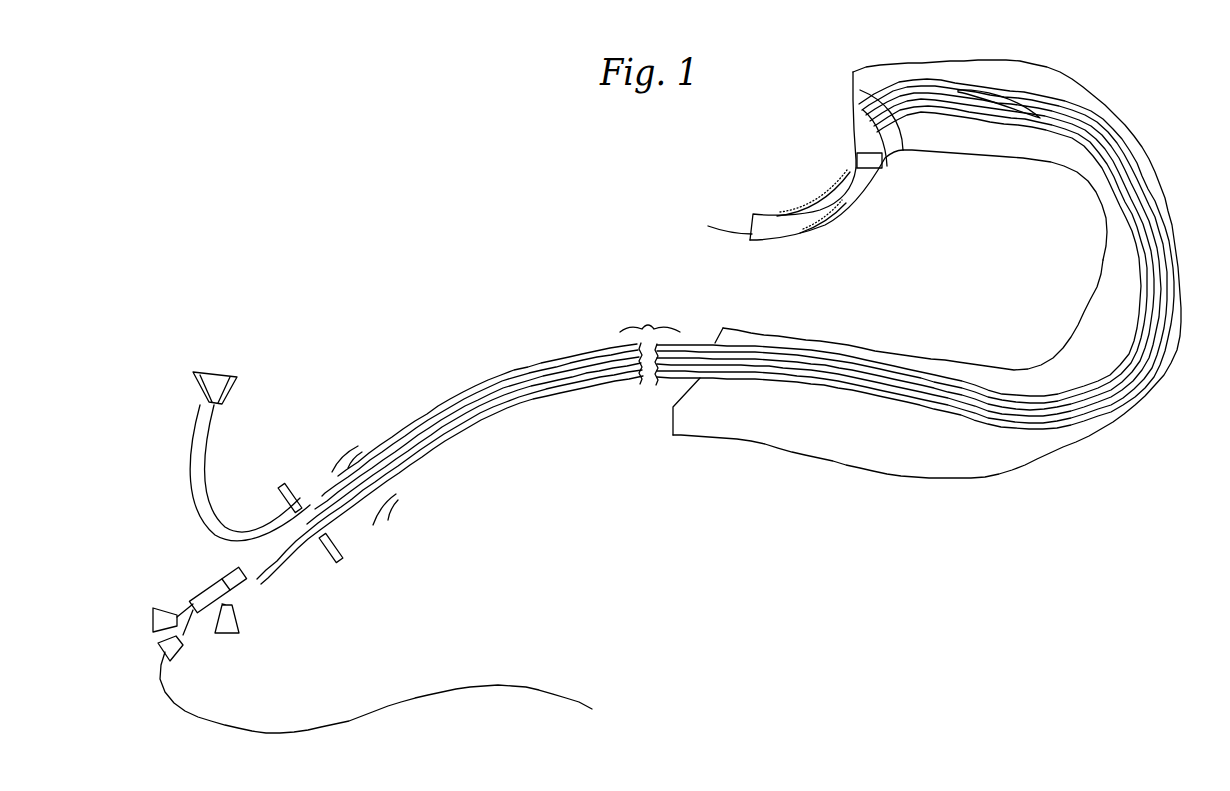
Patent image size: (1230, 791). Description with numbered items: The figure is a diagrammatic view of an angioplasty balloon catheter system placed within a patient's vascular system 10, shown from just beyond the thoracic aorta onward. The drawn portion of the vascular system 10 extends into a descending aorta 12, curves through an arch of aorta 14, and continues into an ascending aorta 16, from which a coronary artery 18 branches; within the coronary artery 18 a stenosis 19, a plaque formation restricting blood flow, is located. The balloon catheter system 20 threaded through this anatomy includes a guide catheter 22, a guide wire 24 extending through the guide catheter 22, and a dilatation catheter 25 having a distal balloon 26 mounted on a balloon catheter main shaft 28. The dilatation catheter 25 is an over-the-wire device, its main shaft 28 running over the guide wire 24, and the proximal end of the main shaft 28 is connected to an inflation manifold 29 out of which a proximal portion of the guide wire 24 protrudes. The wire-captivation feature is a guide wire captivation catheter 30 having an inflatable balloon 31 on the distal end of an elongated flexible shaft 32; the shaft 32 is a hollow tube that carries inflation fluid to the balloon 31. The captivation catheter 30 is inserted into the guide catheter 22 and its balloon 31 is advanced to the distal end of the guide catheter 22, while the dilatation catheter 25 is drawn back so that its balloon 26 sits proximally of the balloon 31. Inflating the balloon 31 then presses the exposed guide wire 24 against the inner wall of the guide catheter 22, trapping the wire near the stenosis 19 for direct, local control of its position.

The vascular system 10 is at (772, 324).
The descending aorta 12 is at (823, 340).
The arch of aorta 14 is at (1077, 322).
The ascending aorta 16 is at (1022, 161).
The coronary artery 18 is at (873, 195).
The stenosis 19 is at (823, 225).
The balloon catheter system 20 is at (458, 384).
The guide catheter 22 is at (860, 90).
The guide wire 24 is at (857, 70).
The dilatation catheter 25 is at (1165, 217).
The distal balloon 26 is at (1000, 97).
The balloon catheter main shaft 28 is at (1103, 153).
The inflation manifold 29 is at (200, 605).
The guide wire captivation catheter 30 is at (863, 110).
The inflatable balloon 31 is at (877, 133).
The elongated flexible shaft 32 is at (967, 105).